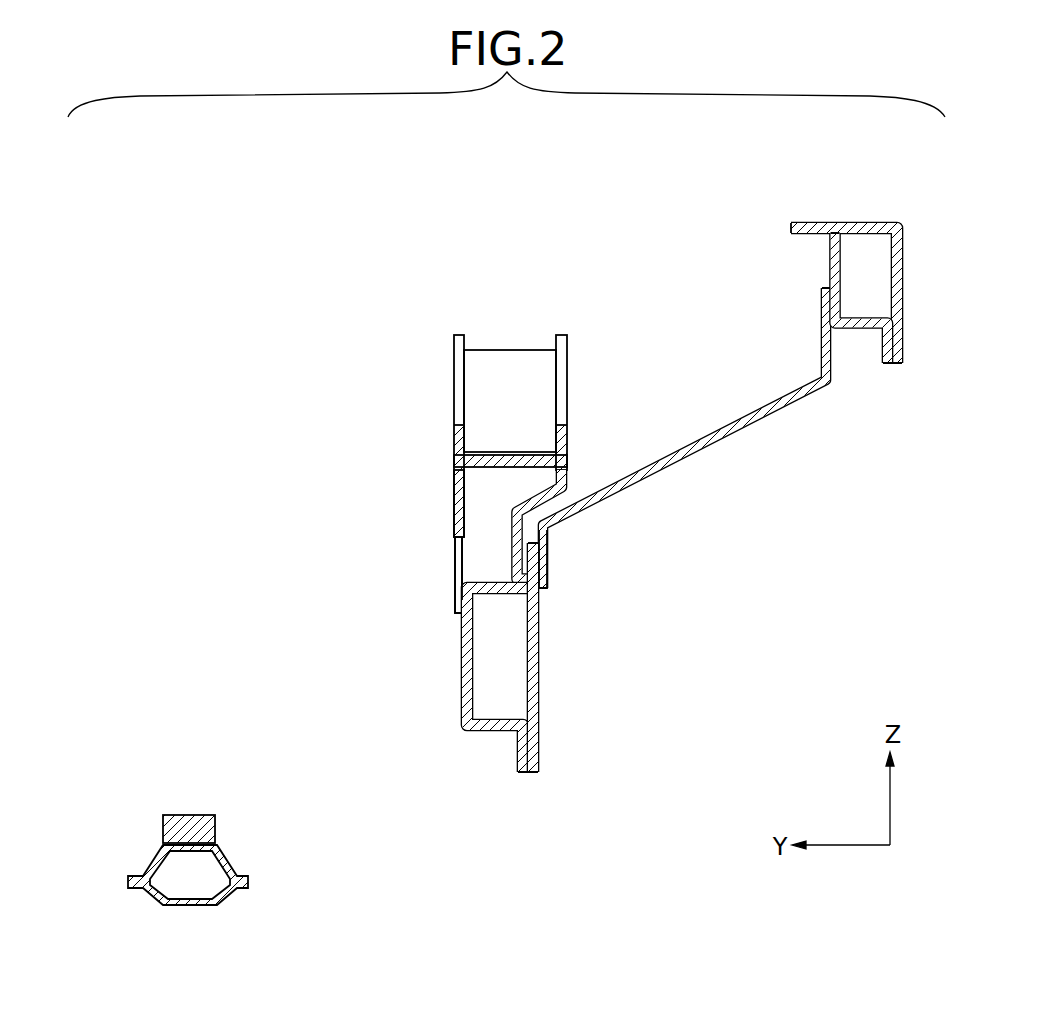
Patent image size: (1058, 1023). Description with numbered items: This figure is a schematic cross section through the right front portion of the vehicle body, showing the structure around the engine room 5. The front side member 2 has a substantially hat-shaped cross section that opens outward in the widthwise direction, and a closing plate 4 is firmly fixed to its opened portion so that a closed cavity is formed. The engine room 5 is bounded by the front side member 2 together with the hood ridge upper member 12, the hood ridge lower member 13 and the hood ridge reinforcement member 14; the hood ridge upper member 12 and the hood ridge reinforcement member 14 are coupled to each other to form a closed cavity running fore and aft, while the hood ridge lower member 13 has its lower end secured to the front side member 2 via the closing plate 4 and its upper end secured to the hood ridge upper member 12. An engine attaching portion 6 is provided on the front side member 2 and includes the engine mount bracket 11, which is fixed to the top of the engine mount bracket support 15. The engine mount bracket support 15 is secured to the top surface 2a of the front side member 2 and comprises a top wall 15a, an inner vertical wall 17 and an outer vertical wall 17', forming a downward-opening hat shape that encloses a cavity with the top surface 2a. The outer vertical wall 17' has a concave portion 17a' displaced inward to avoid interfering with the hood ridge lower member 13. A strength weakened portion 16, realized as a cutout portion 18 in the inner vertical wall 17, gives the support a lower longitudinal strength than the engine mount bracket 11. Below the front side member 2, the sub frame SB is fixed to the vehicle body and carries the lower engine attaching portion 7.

The front side member 2 is at (463, 650).
The top surface 2a is at (453, 578).
The closing plate 4 is at (540, 690).
The engine room 5 is at (163, 407).
The engine attaching portion 6 is at (567, 308).
The lower engine attaching portion 7 is at (150, 820).
The engine mount bracket 11 is at (505, 350).
The hood ridge upper member 12 is at (850, 335).
The hood ridge lower member 13 is at (721, 448).
The hood ridge reinforcement member 14 is at (868, 222).
The engine mount bracket support 15 is at (455, 513).
The top wall 15a is at (568, 455).
The strength weakened portion 16 is at (455, 560).
The inner vertical wall 17 is at (394, 511).
The outer vertical wall 17' is at (595, 504).
The concave portion 17a' is at (592, 560).
The cutout portion 18 is at (458, 575).
The sub frame SB is at (160, 908).